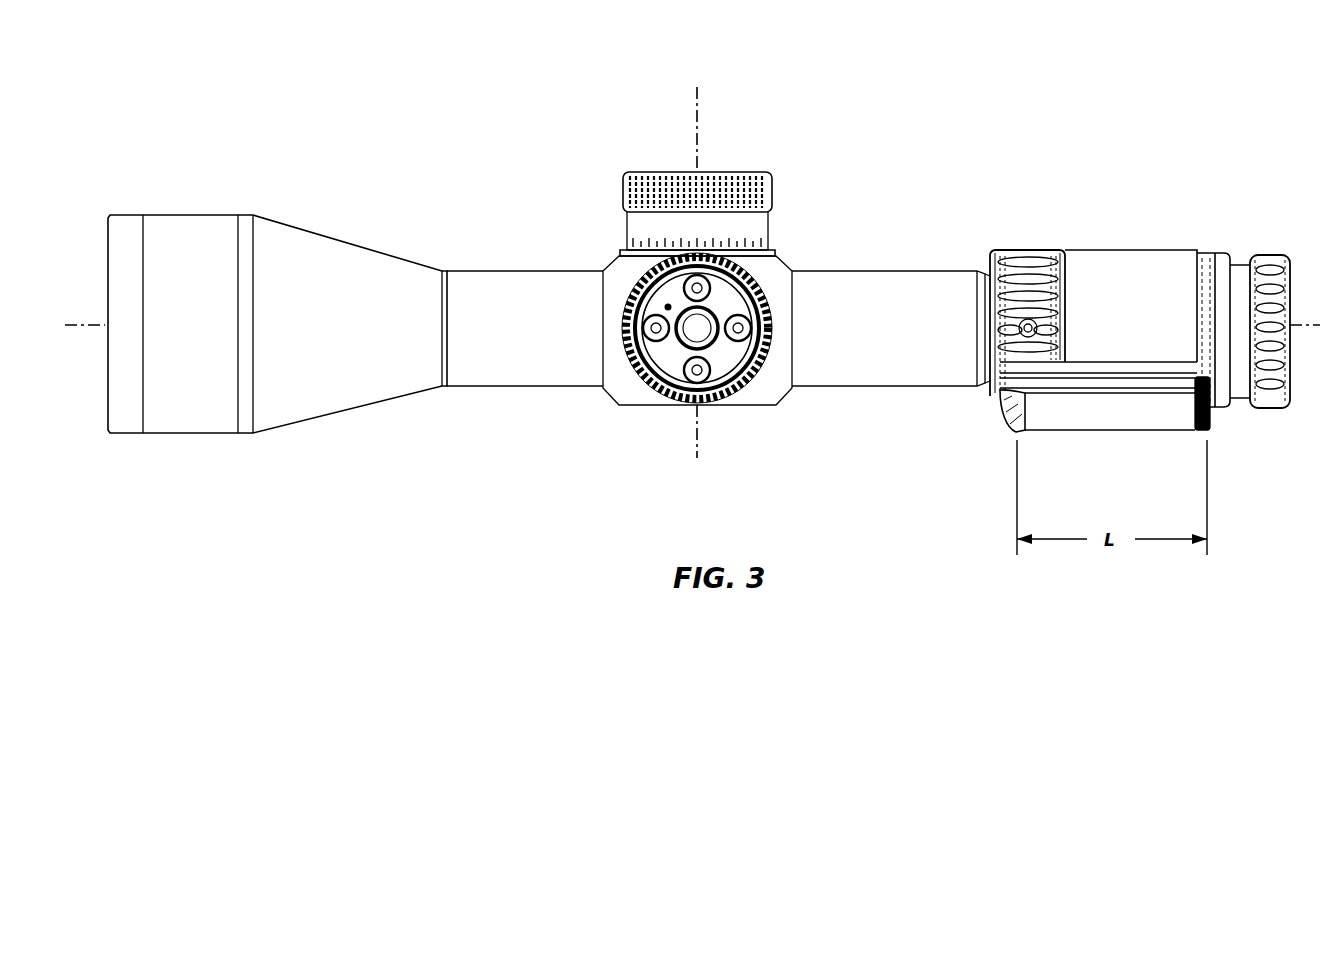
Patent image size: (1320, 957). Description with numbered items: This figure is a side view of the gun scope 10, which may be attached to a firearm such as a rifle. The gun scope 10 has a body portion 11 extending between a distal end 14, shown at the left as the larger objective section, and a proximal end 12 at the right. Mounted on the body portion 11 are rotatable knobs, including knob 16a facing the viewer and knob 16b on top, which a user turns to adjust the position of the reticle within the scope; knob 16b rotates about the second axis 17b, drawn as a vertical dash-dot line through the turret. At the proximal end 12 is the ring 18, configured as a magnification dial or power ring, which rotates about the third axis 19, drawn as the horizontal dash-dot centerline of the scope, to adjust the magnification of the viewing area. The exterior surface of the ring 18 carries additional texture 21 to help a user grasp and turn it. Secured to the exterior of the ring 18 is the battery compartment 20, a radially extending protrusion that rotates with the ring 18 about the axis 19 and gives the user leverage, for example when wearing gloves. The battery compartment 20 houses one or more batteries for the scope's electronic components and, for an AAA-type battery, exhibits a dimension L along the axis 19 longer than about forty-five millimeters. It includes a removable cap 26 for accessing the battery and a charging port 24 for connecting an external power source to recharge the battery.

The gun scope 10 is at (898, 146).
The body portion 11 is at (880, 269).
The proximal end 12 is at (1220, 190).
The distal end 14 is at (255, 183).
The knob 16a is at (640, 366).
The knob 16b is at (767, 172).
The second axis 17b is at (699, 123).
The ring 18 is at (1137, 251).
The third axis 19 is at (90, 323).
The battery compartment 20 is at (1090, 432).
The texture 21 is at (1027, 250).
The charging port 24 is at (998, 405).
The cap 26 is at (1205, 431).